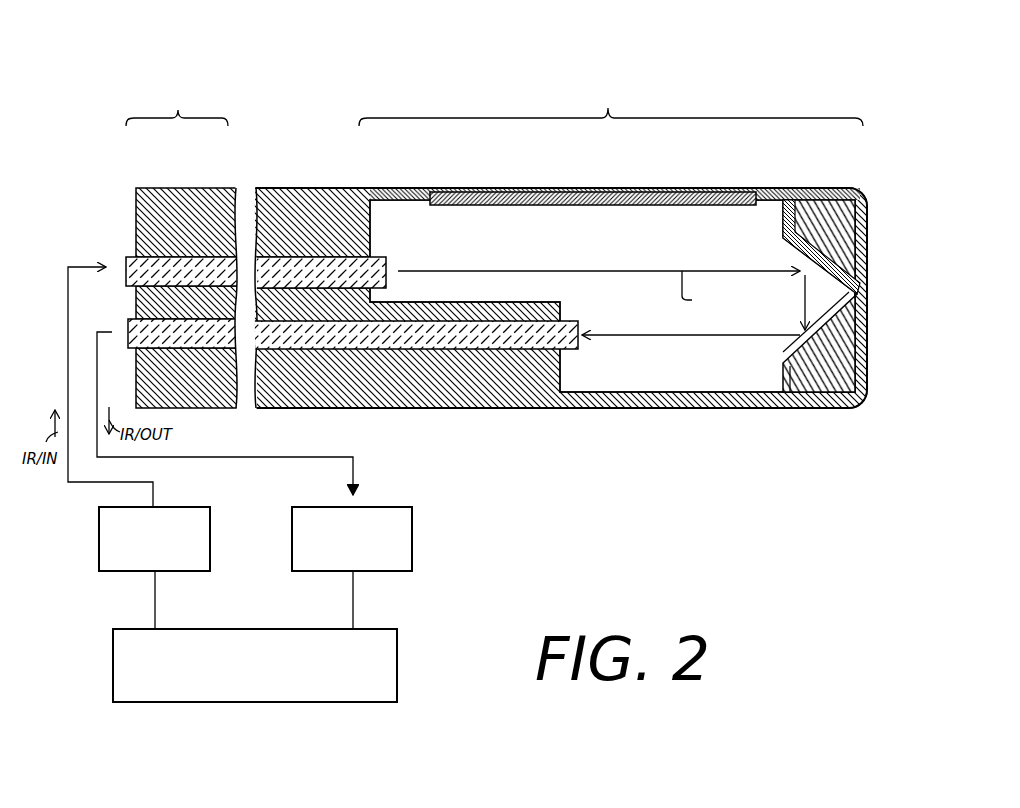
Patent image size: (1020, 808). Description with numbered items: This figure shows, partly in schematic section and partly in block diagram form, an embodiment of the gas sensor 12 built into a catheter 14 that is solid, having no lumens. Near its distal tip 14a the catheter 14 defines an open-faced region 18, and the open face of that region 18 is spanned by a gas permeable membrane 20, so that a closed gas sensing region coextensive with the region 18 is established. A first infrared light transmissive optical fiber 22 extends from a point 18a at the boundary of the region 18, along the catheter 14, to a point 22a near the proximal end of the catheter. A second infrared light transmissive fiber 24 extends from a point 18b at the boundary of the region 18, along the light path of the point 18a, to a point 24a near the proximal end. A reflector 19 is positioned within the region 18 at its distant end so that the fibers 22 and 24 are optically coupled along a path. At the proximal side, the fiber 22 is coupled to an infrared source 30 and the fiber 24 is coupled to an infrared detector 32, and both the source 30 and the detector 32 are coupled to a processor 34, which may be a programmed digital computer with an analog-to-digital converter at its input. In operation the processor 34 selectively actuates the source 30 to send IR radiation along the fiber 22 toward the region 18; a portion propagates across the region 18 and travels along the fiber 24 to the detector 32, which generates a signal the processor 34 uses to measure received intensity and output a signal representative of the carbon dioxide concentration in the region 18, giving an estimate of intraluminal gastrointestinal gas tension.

The gas sensor 12 is at (680, 75).
The catheter 14 is at (393, 410).
The distal tip 14a is at (494, 106).
The open-faced region 18 is at (558, 245).
The boundary point of region 18a is at (392, 254).
The boundary point of region 18b is at (437, 322).
The reflector 19 is at (858, 264).
The gas permeable membrane 20 is at (505, 192).
The first infrared light transmissive optical fiber 22 is at (205, 262).
The proximal point of first fiber 22a is at (123, 255).
The second infrared light transmissive fiber 24 is at (208, 336).
The proximal point of second fiber 24a is at (122, 318).
The infrared source 30 is at (99, 537).
The infrared detector 32 is at (412, 528).
The processor 34 is at (113, 665).